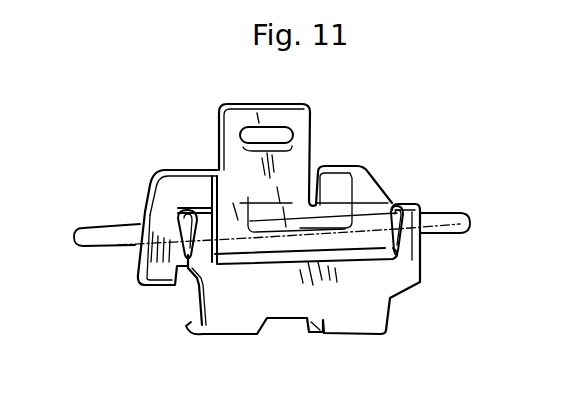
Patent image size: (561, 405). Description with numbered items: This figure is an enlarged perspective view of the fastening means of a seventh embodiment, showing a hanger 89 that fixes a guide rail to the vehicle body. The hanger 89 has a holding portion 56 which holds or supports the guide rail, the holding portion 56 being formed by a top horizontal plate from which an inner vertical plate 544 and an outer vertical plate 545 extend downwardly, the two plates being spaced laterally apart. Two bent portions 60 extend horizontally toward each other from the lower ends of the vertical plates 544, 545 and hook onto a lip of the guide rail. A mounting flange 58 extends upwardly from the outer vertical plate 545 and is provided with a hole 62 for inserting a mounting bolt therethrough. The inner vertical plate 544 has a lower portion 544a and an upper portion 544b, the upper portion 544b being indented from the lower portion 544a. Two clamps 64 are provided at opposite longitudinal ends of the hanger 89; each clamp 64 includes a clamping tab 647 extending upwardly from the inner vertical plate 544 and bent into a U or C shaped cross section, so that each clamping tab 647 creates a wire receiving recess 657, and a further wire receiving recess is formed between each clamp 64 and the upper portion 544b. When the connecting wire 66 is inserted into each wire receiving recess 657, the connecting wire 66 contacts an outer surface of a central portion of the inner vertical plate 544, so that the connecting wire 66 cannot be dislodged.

The hanger 89 is at (395, 162).
The mounting flange 58 is at (310, 120).
The hole 62 is at (250, 130).
The clamp 64 is at (162, 177).
The wire receiving recess 657 is at (177, 218).
The connecting wire 66 is at (457, 213).
The outer vertical plate 545 is at (137, 257).
The clamping tab 647 is at (177, 245).
The bent portion 60 is at (163, 280).
The upper portion of the inner vertical plate 544b is at (302, 238).
The lower portion of the inner vertical plate 544a is at (382, 294).
The holding portion 56 is at (397, 278).
The inner vertical plate 544 is at (367, 302).